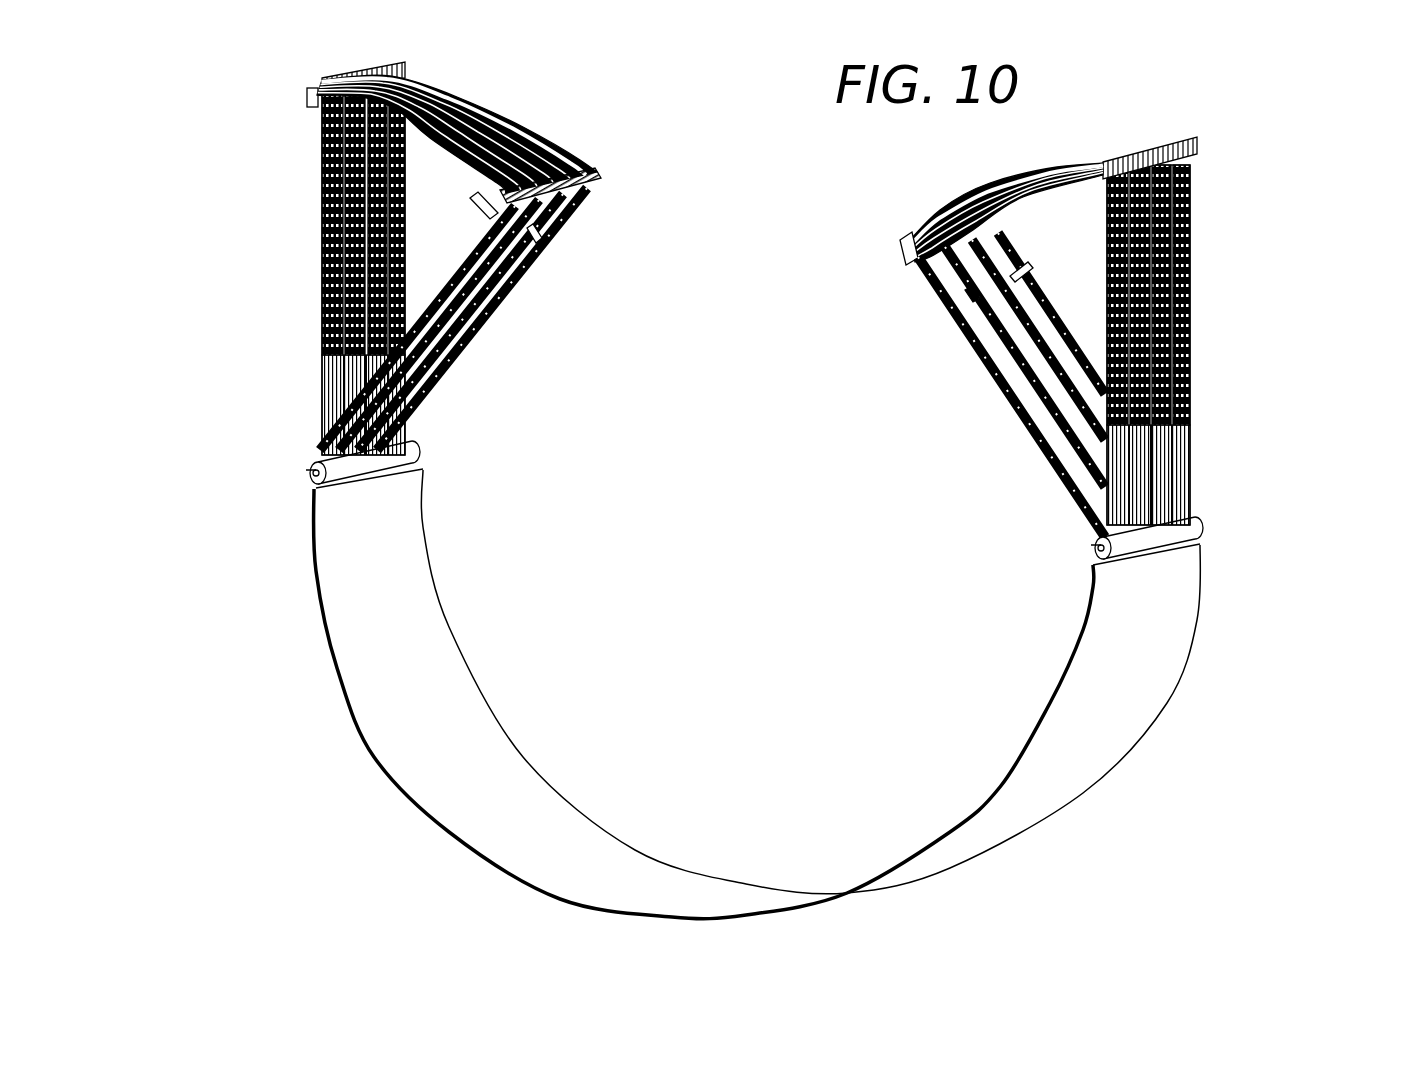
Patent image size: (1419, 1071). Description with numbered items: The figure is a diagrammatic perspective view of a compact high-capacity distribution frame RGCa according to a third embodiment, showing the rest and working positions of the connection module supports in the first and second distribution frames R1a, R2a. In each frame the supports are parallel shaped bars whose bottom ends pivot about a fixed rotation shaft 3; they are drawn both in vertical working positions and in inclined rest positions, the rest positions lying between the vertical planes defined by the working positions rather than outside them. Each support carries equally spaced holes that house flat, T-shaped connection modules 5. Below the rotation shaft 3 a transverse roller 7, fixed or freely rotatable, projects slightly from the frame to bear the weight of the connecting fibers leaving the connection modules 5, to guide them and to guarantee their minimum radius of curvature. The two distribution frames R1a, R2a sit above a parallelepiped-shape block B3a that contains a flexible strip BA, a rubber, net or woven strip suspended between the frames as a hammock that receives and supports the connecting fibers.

The connection module 5 is at (540, 232).
The transverse roller 7 is at (405, 452).
The rotation shaft 3 is at (318, 462).
The high-capacity distribution frame RGCa is at (735, 235).
The first distribution frame R1a is at (298, 327).
The second distribution frame R2a is at (1278, 343).
The parallelepiped-shape block B3a is at (805, 680).
The flexible strip BA is at (550, 808).